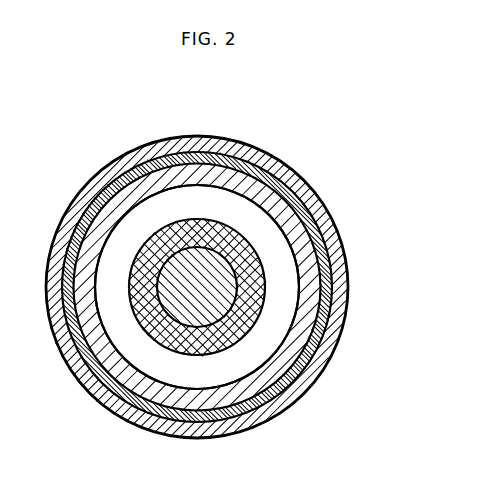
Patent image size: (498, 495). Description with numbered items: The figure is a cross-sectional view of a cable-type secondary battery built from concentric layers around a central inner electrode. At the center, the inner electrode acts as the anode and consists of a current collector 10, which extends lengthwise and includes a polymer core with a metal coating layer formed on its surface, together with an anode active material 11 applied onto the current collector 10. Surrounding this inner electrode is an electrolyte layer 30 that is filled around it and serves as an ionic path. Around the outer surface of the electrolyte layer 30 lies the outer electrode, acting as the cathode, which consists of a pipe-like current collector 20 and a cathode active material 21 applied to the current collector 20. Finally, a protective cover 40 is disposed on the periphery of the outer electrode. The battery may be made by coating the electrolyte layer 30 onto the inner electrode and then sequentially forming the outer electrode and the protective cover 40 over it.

The current collector of inner electrode 10 is at (190, 247).
The active material of inner electrode 11 is at (203, 230).
The electrolyte layer 30 is at (257, 213).
The active material of outer electrode 21 is at (280, 207).
The current collector of outer electrode 20 is at (308, 221).
The protective cover 40 is at (339, 241).